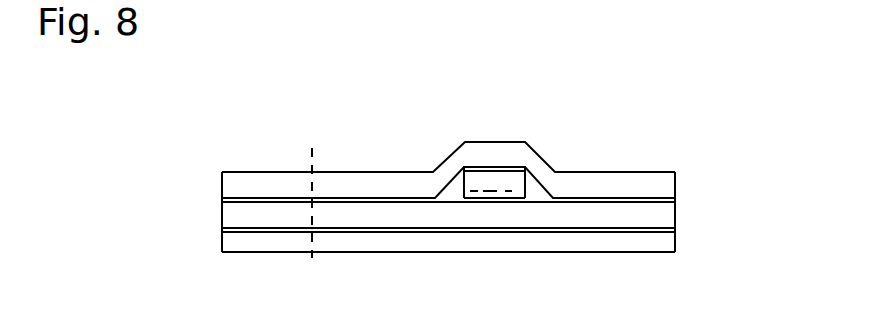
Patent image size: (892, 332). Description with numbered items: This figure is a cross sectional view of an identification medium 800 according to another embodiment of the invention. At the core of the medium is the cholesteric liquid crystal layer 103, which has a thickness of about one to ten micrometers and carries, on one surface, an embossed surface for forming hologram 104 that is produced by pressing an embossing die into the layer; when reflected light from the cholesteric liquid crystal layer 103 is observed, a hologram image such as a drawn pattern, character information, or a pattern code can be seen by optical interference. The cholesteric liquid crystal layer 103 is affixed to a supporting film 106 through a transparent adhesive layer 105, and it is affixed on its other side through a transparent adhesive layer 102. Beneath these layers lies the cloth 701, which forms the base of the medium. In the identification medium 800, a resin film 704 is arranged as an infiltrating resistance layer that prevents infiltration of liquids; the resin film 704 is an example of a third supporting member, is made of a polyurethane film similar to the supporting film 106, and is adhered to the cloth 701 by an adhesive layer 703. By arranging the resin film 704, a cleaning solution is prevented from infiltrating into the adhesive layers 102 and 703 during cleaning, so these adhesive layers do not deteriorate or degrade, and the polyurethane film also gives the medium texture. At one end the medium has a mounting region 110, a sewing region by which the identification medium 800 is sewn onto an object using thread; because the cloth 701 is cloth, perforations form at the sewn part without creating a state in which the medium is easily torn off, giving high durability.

The identification medium 800 is at (596, 120).
The supporting film 106 is at (665, 183).
The transparent adhesive layer 102 is at (675, 198).
The cloth 701 is at (668, 217).
The adhesive layer 703 is at (638, 228).
The resin film 704 is at (573, 238).
The embossed surface for forming hologram 104 is at (492, 192).
The cholesteric liquid crystal layer 103 is at (485, 178).
The transparent adhesive layer 105 is at (513, 170).
The mounting region 110 is at (313, 283).